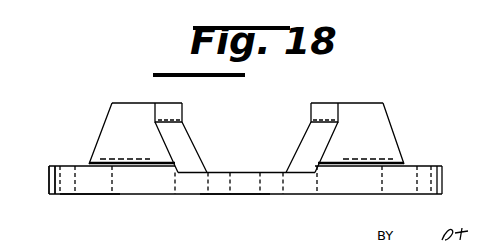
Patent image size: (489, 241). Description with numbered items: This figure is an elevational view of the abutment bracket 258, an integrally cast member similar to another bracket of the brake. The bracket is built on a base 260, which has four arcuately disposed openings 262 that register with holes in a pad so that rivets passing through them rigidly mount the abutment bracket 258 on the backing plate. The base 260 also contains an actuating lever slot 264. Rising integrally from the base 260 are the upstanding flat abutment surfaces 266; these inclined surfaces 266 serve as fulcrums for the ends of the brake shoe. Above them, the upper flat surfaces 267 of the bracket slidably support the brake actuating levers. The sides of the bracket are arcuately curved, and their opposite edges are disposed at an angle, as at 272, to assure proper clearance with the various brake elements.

The abutment bracket 258 is at (422, 162).
The base 260 is at (58, 194).
The arcuately disposed openings 262 is at (90, 187).
The actuating lever slot 264 is at (232, 194).
The upstanding flat abutment surfaces 266 is at (112, 135).
The upper flat surfaces 267 is at (133, 103).
The angled edges 272 is at (174, 142).